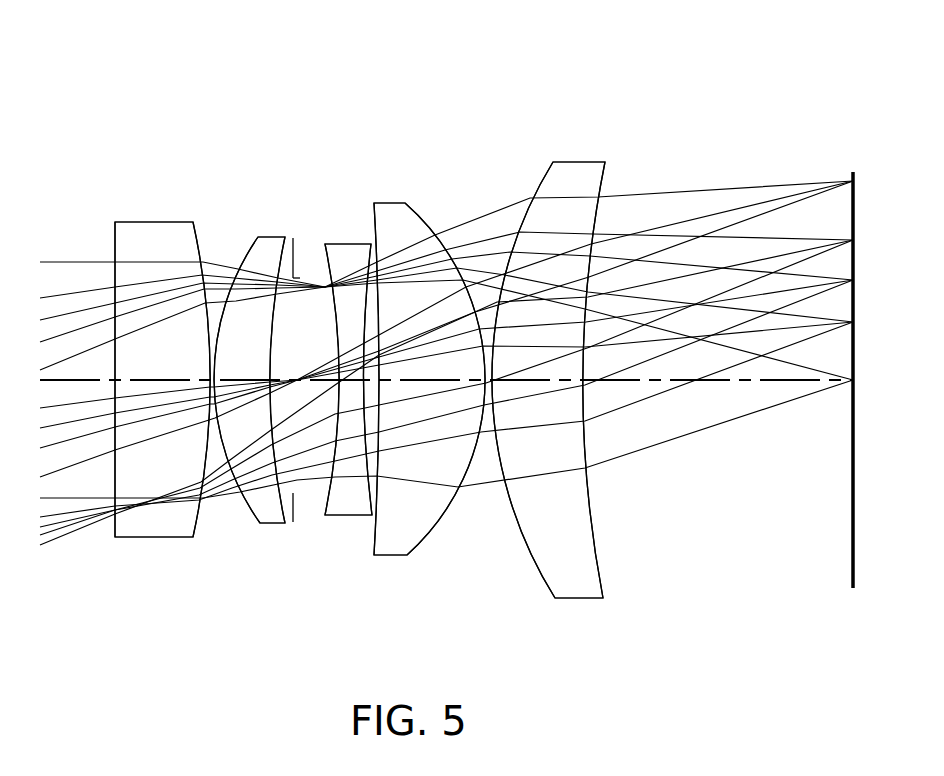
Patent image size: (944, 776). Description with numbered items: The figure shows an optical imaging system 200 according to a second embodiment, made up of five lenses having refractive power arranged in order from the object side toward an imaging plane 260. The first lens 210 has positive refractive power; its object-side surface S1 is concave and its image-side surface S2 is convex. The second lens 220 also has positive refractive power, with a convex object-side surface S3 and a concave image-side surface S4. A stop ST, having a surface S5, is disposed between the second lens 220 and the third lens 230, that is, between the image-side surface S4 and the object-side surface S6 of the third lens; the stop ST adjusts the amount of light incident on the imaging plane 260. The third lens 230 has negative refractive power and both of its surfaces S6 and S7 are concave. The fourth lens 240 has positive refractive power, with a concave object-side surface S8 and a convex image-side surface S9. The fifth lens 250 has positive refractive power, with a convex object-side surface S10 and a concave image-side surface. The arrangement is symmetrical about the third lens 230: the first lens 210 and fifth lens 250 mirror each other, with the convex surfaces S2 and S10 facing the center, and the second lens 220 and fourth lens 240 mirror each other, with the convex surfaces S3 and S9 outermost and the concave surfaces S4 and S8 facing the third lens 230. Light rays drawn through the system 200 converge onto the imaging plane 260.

The optical imaging system 200 is at (241, 158).
The first lens 210 is at (150, 539).
The second lens 220 is at (263, 527).
The third lens 230 is at (353, 522).
The fourth lens 240 is at (390, 558).
The fifth lens 250 is at (578, 600).
The imaging plane 260 is at (851, 573).
The stop ST is at (291, 494).
The object-side surface of the first lens S1 is at (112, 532).
The image-side surface of the first lens S2 is at (196, 540).
The object-side surface of the second lens S3 is at (248, 516).
The image-side surface of the second lens S4 is at (284, 528).
The surface of the stop S5 is at (292, 265).
The object-side surface of the third lens S6 is at (332, 522).
The image-side surface of the third lens S7 is at (378, 258).
The object-side surface of the fourth lens S8 is at (410, 558).
The image-side surface of the fourth lens S9 is at (453, 512).
The object-side surface of the fifth lens S10 is at (542, 174).